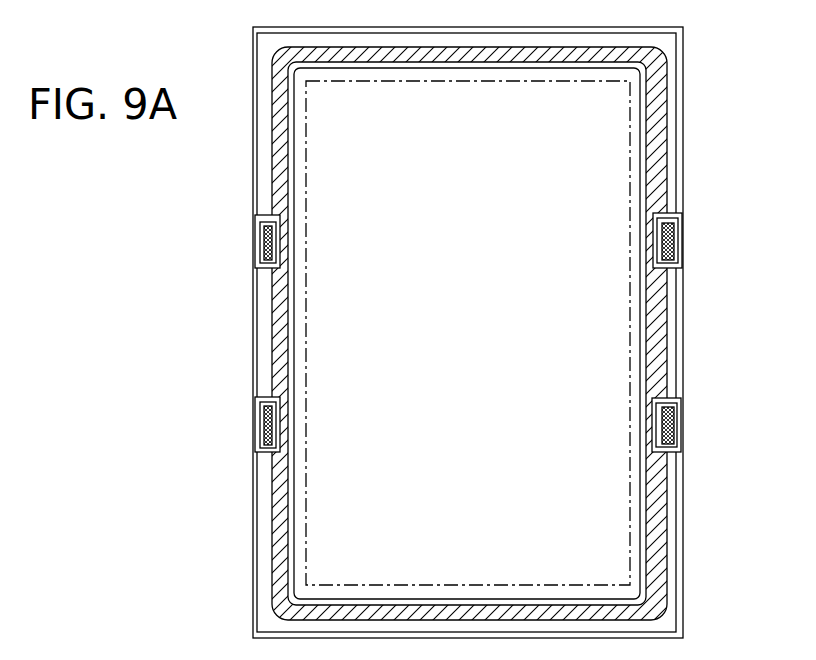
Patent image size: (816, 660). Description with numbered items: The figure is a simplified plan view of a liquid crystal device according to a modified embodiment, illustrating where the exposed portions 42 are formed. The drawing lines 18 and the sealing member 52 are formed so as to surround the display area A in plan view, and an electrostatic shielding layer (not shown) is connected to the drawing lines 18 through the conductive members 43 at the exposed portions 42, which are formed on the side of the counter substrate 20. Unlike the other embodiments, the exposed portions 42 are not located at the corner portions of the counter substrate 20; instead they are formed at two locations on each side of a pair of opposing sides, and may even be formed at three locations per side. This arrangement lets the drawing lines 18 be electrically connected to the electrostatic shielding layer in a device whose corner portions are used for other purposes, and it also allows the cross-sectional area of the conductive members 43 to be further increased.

The drawing lines 18 is at (670, 63).
The counter substrate 20 is at (680, 100).
The sealing member 52 is at (655, 148).
The exposed portions 42 is at (670, 267).
The conductive members 43 is at (678, 235).
The display area A is at (597, 332).